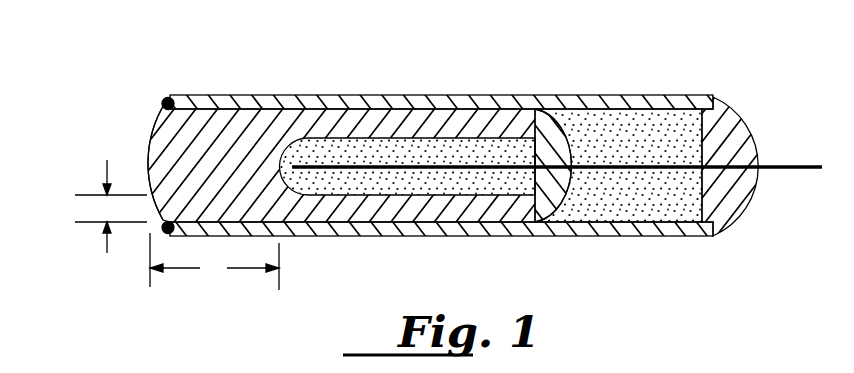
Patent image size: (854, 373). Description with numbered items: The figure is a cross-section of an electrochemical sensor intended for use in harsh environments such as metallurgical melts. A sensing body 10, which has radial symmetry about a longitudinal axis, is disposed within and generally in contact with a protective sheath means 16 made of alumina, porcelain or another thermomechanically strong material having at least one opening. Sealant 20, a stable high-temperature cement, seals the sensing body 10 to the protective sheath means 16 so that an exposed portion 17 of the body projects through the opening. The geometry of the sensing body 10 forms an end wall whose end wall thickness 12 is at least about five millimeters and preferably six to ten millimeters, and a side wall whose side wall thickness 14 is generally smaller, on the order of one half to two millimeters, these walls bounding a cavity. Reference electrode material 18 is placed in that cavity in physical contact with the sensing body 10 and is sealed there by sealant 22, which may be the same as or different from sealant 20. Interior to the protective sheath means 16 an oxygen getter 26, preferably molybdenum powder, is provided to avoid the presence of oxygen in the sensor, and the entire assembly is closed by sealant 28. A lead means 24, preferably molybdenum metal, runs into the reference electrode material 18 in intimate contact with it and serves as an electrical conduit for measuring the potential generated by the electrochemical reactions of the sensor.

The sensing body 10 is at (202, 135).
The end wall thickness 12 is at (214, 261).
The side wall thickness 14 is at (103, 208).
The protective sheath means 16 is at (296, 98).
The exposed portion 17 is at (153, 143).
The reference electrode material 18 is at (375, 153).
The sealant 20 is at (163, 103).
The sealant 22 is at (557, 143).
The lead means 24 is at (805, 170).
The oxygen getter 26 is at (642, 143).
The sealant 28 is at (726, 127).